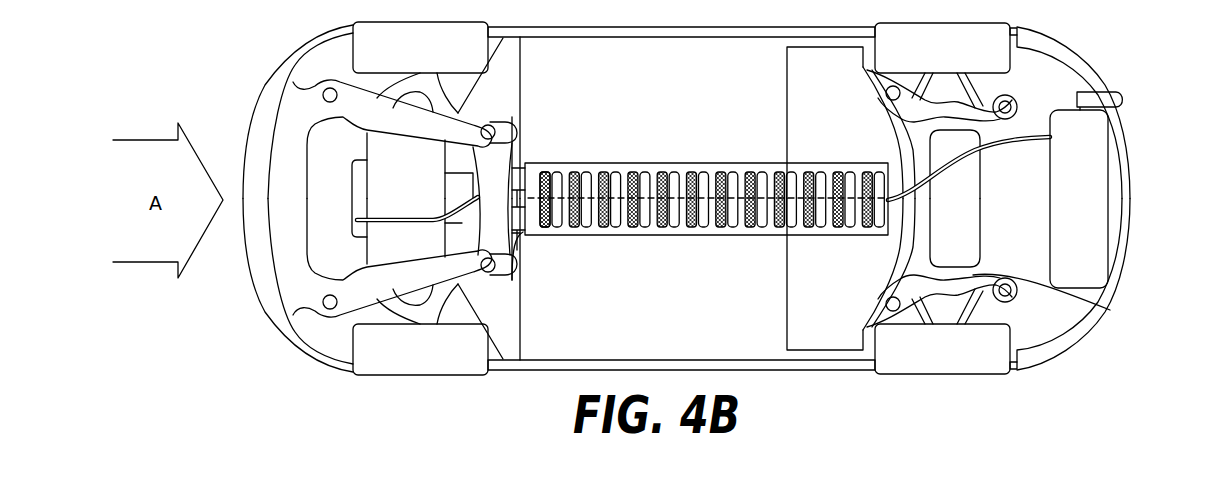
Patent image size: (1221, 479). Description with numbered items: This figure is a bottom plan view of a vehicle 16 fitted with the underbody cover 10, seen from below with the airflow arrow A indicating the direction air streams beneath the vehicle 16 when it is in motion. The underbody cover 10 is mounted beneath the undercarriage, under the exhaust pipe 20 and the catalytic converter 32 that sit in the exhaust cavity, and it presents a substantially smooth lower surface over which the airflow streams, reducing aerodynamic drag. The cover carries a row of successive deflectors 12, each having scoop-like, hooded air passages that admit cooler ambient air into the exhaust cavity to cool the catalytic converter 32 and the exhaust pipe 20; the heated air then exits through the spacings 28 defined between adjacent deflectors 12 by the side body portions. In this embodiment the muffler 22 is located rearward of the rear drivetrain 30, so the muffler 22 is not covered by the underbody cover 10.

The underbody cover 10 is at (706, 185).
The deflectors 12 is at (605, 167).
The vehicle 16 is at (1120, 59).
The exhaust pipe 20 is at (642, 198).
The muffler 22 is at (1092, 198).
The spacings 28 is at (583, 173).
The rear drivetrain 30 is at (1110, 310).
The catalytic converter 32 is at (518, 233).